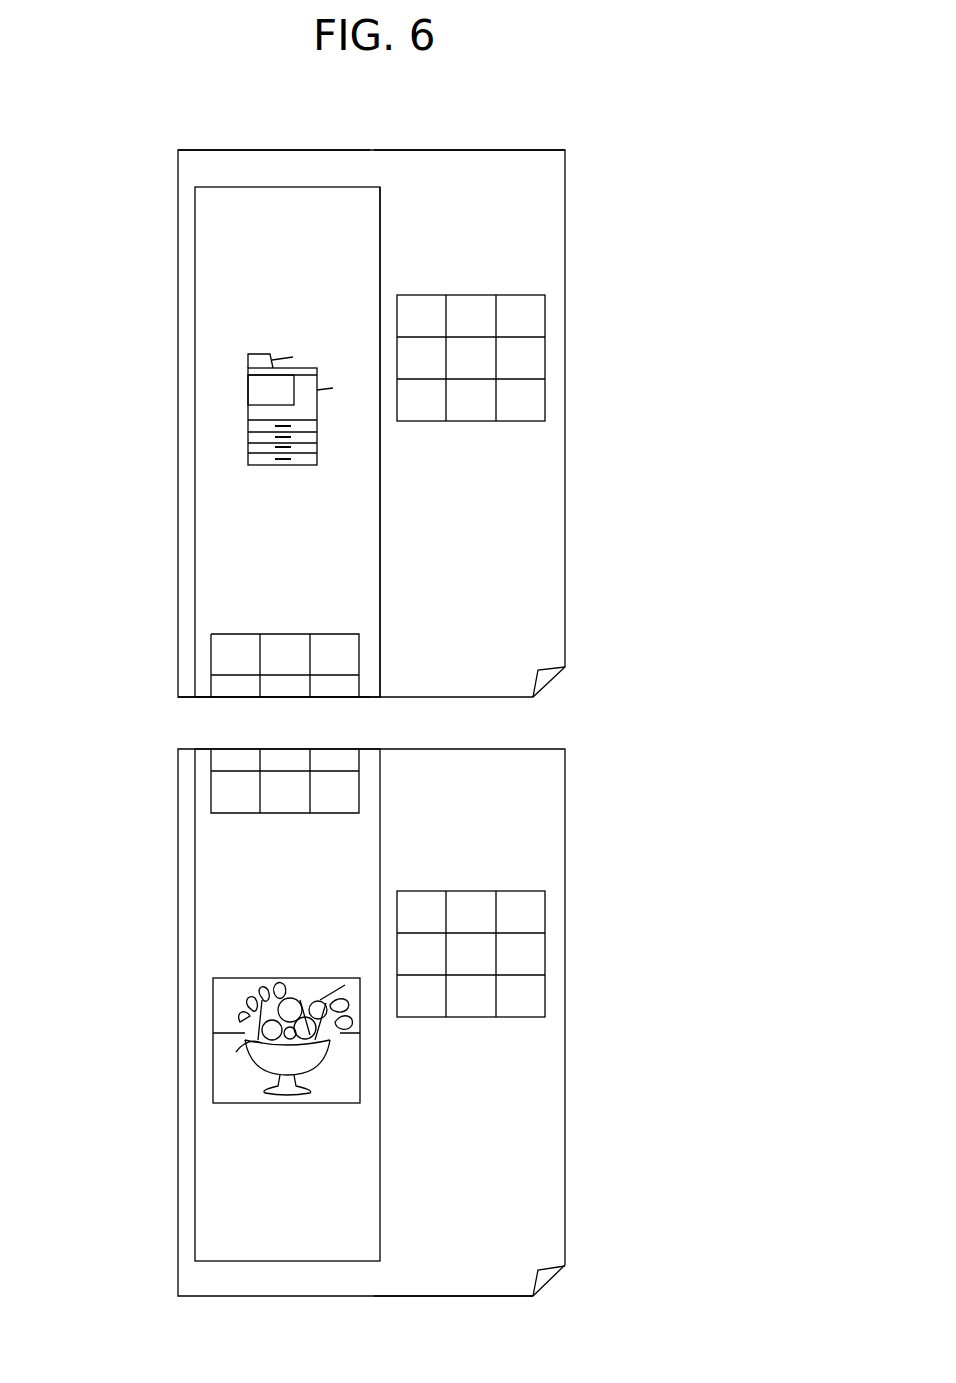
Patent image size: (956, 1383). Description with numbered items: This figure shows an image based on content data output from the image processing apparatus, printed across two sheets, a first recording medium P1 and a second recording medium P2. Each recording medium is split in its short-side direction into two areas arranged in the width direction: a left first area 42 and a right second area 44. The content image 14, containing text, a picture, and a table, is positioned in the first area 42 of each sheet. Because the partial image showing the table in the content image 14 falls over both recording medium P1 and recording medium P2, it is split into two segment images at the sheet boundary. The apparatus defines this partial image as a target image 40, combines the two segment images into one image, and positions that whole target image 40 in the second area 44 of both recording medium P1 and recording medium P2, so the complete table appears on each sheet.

The content image 14 is at (195, 440).
The target image 40 is at (545, 333).
The first area 42 is at (178, 133).
The second area 44 is at (565, 133).
The recording medium P1 is at (565, 392).
The recording medium P2 is at (565, 1007).